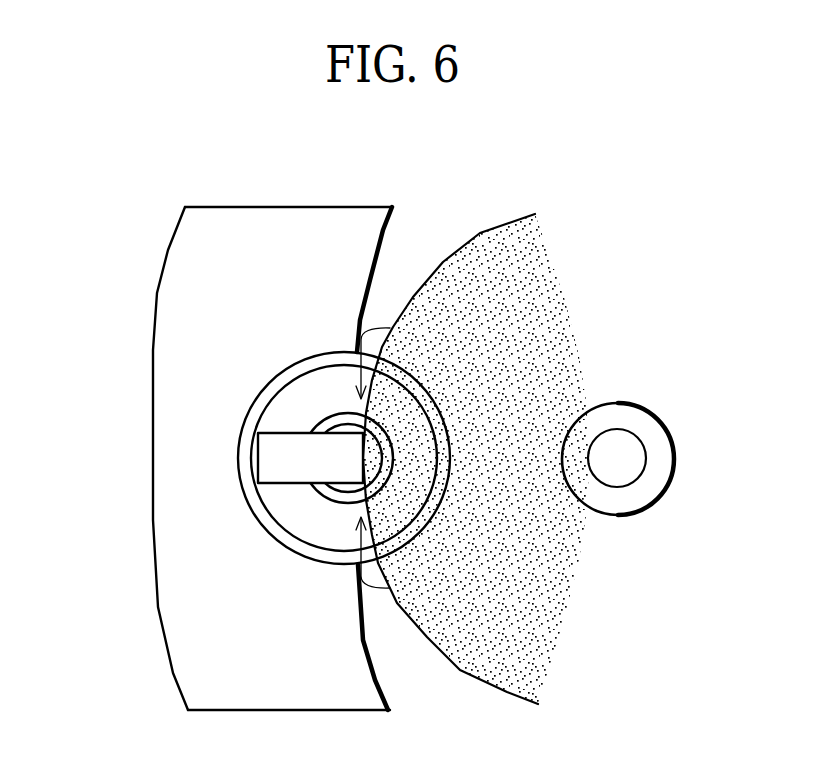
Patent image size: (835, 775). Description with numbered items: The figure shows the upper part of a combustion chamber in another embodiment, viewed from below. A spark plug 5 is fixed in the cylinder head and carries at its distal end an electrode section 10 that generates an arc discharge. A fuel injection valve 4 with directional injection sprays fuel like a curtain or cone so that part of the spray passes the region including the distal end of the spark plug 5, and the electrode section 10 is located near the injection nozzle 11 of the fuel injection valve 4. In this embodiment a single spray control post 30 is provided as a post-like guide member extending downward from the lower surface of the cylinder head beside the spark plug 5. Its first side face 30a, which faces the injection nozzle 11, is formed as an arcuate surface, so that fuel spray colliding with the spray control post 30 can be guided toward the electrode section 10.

The spray control post 30 is at (150, 292).
The first side face 30a is at (378, 257).
The spark plug 5 is at (237, 460).
The electrode section 10 is at (300, 420).
The fuel injection valve 4 is at (655, 417).
The injection nozzle 11 is at (602, 457).